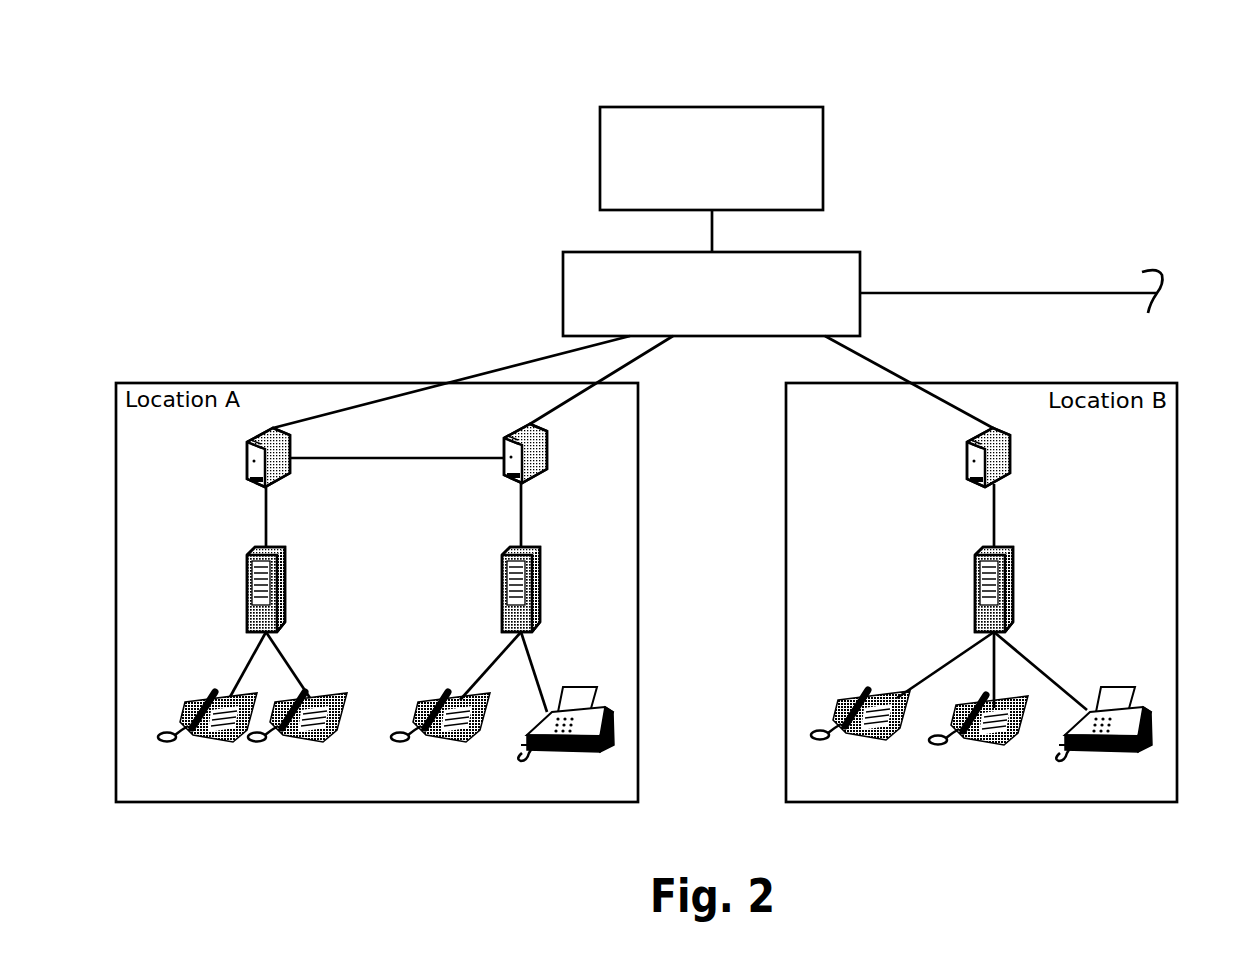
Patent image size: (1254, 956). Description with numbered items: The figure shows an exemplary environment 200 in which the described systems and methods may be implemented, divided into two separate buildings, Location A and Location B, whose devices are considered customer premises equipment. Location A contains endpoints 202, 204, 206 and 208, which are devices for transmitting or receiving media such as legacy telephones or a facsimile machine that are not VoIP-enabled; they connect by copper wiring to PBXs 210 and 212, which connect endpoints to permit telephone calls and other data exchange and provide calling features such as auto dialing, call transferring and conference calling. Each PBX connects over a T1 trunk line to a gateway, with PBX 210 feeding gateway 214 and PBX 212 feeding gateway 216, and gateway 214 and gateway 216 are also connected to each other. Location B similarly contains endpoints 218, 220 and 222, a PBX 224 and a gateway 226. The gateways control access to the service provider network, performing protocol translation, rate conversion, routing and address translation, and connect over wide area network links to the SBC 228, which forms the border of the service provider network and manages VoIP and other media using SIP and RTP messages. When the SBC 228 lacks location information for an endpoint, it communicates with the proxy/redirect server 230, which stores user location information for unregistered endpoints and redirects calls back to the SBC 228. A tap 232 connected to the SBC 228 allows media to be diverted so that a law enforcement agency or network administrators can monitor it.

The environment 200 is at (570, 62).
The endpoint 202 is at (207, 737).
The endpoint 204 is at (297, 737).
The endpoint 206 is at (440, 737).
The endpoint 208 is at (566, 734).
The PBX 210 is at (242, 589).
The PBX 212 is at (543, 589).
The gateway 214 is at (245, 457).
The gateway 216 is at (549, 453).
The endpoint 218 is at (860, 736).
The endpoint 220 is at (978, 738).
The endpoint 222 is at (1104, 733).
The PBX 224 is at (970, 589).
The gateway 226 is at (966, 457).
The SBC 228 is at (711, 294).
The proxy/redirect server 230 is at (711, 158).
The tap 232 is at (1041, 292).